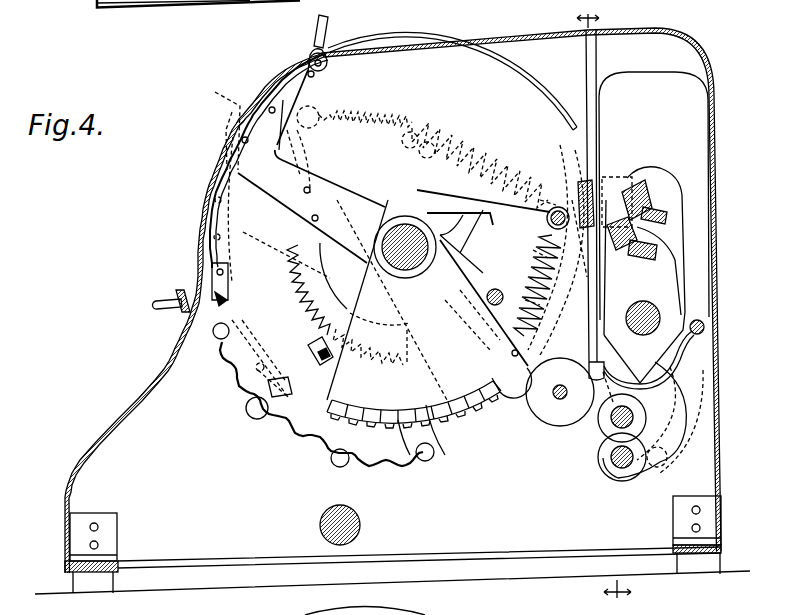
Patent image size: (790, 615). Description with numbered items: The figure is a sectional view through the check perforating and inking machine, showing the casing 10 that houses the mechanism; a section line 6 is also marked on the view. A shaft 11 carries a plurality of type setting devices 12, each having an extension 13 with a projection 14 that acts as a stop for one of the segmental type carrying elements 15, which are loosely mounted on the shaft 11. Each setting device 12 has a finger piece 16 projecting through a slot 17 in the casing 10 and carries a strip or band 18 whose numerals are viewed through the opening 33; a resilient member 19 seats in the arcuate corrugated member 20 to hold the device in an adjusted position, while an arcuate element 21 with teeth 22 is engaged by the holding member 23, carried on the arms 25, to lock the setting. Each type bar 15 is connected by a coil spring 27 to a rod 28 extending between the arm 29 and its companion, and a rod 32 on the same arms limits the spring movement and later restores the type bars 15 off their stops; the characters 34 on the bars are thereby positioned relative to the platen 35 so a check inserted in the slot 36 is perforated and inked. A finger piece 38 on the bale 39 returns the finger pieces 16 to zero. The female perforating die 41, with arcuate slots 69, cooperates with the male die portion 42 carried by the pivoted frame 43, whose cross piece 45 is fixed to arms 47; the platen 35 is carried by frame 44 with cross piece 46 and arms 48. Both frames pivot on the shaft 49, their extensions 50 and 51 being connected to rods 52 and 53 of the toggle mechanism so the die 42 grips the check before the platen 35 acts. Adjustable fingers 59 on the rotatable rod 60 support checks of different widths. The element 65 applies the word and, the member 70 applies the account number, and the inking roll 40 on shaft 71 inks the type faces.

The section line 6 is at (604, 306).
The casing 10 is at (718, 142).
The shaft 11 is at (394, 222).
The type setting devices 12 is at (278, 195).
The extension 13 is at (472, 230).
The projection 14 is at (447, 196).
The type carrying elements 15 is at (528, 152).
The finger piece 16 is at (326, 30).
The slot 17 is at (258, 98).
The strip or band 18 is at (470, 52).
The resilient member 19 is at (213, 333).
The corrugated member 20 is at (240, 400).
The arcuate element 21 is at (296, 283).
The teeth 22 is at (310, 306).
The holding member 23 is at (318, 358).
The arms 25 is at (340, 290).
The coil spring 27 is at (488, 138).
The rod 28 is at (318, 110).
The arm 29 is at (362, 112).
The rod 32 is at (418, 130).
The opening 33 is at (336, 47).
The characters 34 is at (440, 452).
The platen 35 is at (667, 220).
The slot 36 is at (597, 68).
The finger piece 38 is at (156, 302).
The bale 39 is at (182, 289).
The inking mechanism 40 is at (557, 402).
The female perforating die 41 is at (612, 222).
The male portion of the die 42 is at (632, 188).
The pivoted frame 43 is at (665, 190).
The pivoted frame 44 is at (667, 282).
The cross piece 45 is at (648, 190).
The cross piece 46 is at (637, 258).
The arms 47 is at (708, 198).
The arms 48 is at (670, 268).
The shaft 49 is at (650, 304).
The extension 50 is at (600, 425).
The extension 51 is at (626, 480).
The rod 52 is at (605, 455).
The rod 53 is at (612, 470).
The adjustable fingers 59 is at (668, 374).
The rotatable rod 60 is at (705, 329).
The means for applying the word 'and' 65 is at (500, 398).
The arcuate slots 69 is at (592, 185).
The means for applying the account number 70 is at (415, 172).
The shaft 71 is at (528, 385).